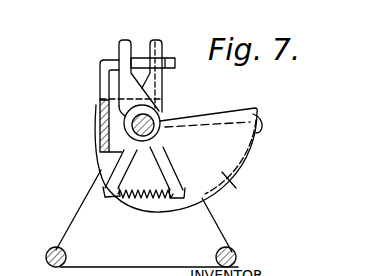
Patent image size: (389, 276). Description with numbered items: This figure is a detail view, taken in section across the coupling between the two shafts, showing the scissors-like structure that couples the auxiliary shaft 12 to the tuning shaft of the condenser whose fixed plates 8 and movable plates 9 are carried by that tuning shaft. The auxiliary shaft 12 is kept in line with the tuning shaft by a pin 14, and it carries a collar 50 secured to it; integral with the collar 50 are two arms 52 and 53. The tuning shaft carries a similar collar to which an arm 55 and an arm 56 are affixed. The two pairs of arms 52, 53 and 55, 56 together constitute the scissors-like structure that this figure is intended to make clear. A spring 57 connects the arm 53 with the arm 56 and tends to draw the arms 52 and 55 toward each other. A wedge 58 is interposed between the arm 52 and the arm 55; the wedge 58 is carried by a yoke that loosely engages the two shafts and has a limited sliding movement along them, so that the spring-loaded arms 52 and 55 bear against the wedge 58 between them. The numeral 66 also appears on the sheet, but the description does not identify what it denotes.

The fixed plates 8 is at (70, 223).
The movable plates 9 is at (262, 132).
The auxiliary shaft 12 is at (130, 131).
The pin 14 is at (137, 127).
The collar 50 is at (170, 122).
The arm 52 is at (120, 45).
The arm 53 is at (167, 162).
The arm 55 is at (160, 43).
The arm 56 is at (100, 167).
The spring 57 is at (156, 204).
The wedge 58 is at (140, 57).
The lead wire 66 is at (26, 10).